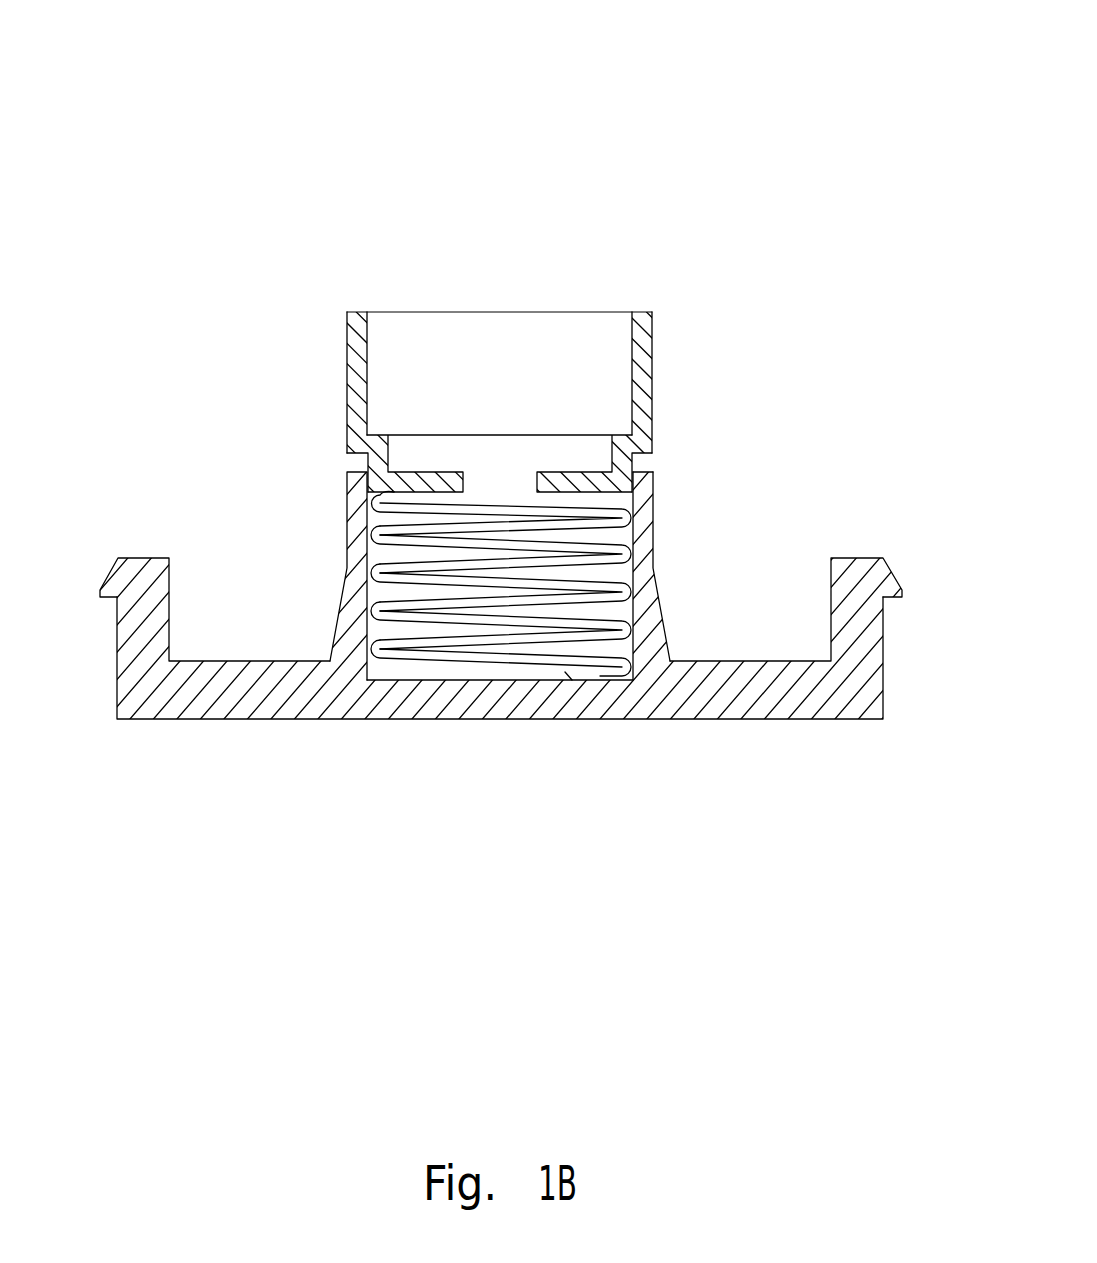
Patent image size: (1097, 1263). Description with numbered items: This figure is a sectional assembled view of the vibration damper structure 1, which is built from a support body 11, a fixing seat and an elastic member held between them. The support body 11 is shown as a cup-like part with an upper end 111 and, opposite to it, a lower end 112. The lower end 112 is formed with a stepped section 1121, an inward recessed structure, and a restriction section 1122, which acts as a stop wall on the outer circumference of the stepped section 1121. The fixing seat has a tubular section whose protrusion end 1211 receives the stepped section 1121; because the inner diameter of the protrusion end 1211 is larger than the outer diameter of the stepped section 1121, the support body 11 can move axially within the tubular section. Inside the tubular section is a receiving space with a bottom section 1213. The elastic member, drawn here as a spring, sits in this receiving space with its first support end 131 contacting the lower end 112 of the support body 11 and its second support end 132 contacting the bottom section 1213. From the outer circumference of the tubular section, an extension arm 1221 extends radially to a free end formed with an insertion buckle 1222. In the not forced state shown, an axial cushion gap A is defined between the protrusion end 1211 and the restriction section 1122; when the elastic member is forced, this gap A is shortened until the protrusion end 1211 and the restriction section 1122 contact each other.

The vibration damper structure 1 is at (728, 130).
The support body 11 is at (353, 383).
The upper end 111 is at (642, 312).
The lower end 112 is at (583, 490).
The stepped section 1121 is at (370, 460).
The restriction section 1122 is at (652, 432).
The axial cushion gap A is at (652, 463).
The protrusion end 1211 is at (652, 473).
The bottom section 1213 is at (412, 682).
The extension arm 1221 is at (232, 698).
The insertion buckle 1222 is at (117, 573).
The first support end 131 is at (370, 502).
The second support end 132 is at (573, 675).